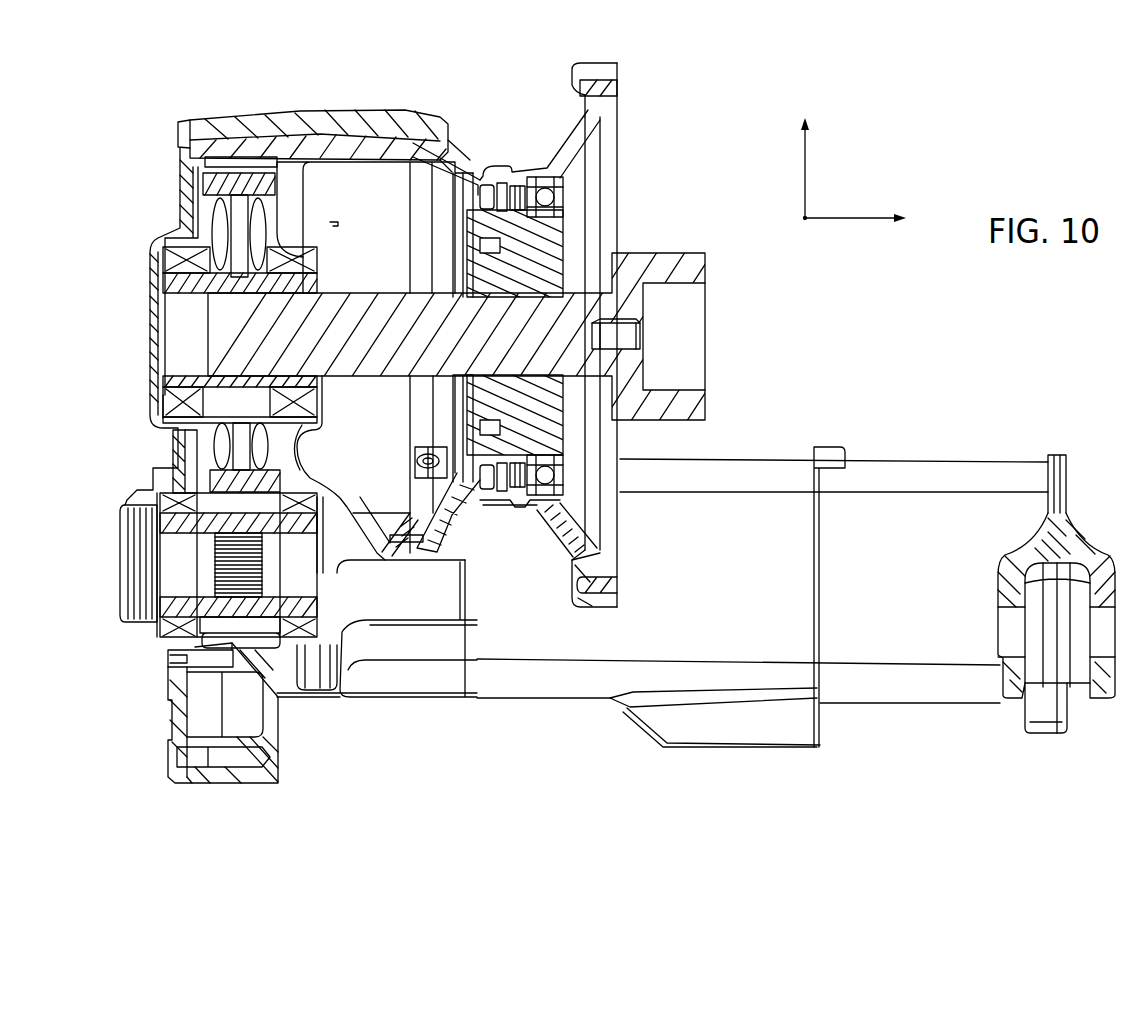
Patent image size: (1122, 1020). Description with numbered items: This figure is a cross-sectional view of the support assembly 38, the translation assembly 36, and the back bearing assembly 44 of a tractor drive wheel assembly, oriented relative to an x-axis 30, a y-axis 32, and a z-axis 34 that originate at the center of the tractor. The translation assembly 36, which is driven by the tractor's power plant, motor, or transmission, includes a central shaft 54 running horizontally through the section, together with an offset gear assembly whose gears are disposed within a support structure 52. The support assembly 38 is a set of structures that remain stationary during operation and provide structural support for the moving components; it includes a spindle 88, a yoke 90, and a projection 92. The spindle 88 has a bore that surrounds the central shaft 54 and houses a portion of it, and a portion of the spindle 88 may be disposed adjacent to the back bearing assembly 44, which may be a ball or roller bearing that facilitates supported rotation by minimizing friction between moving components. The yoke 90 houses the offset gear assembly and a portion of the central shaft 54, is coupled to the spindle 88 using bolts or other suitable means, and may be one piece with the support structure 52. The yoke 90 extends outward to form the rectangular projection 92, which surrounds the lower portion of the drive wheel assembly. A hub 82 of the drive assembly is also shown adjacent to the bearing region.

The x-axis 30 is at (850, 222).
The y-axis 32 is at (803, 174).
The z-axis 34 is at (807, 216).
The translation assembly 36 is at (146, 428).
The support assembly 38 is at (403, 92).
The back bearing assembly 44 is at (548, 487).
The support structure 52 is at (168, 468).
The central shaft 54 is at (373, 313).
The hub 82 is at (545, 166).
The spindle 88 is at (553, 255).
The yoke 90 is at (360, 547).
The projection 92 is at (1003, 470).